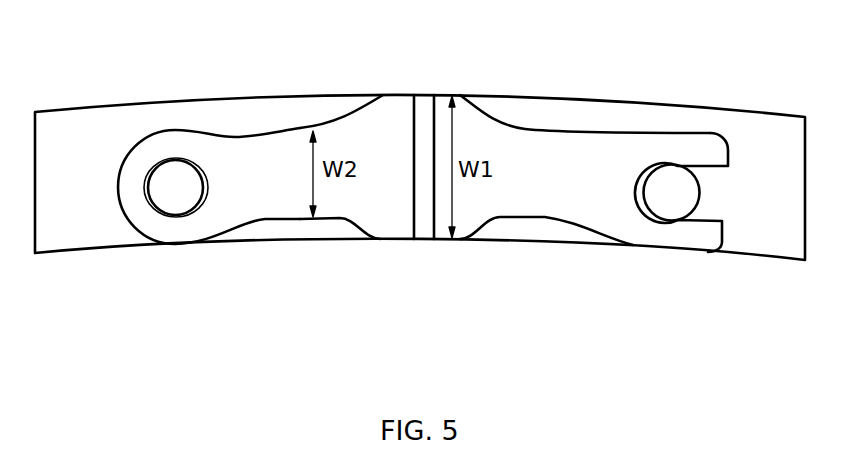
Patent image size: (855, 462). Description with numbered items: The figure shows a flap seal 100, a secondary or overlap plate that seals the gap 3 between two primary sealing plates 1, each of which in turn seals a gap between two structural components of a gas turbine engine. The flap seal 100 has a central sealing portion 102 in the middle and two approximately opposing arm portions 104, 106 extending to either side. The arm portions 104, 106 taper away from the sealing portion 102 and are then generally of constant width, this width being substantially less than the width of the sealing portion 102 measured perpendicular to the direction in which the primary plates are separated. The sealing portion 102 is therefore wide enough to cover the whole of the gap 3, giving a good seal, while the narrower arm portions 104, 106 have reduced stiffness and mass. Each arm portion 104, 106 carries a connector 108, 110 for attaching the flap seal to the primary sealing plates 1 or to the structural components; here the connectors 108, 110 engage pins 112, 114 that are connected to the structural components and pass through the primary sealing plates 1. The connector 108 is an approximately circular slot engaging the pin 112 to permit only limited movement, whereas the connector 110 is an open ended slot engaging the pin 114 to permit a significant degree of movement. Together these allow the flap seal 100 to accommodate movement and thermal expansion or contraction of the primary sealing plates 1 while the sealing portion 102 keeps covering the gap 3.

The primary sealing plate 1 is at (232, 243).
The gap 3 is at (425, 228).
The flap seal 100 is at (435, 168).
The central sealing portion 102 is at (388, 149).
The arm portion 104 is at (272, 190).
The arm portion 106 is at (528, 190).
The connector 108 is at (160, 213).
The connector 110 is at (653, 163).
The pin 112 is at (175, 187).
The pin 114 is at (672, 190).